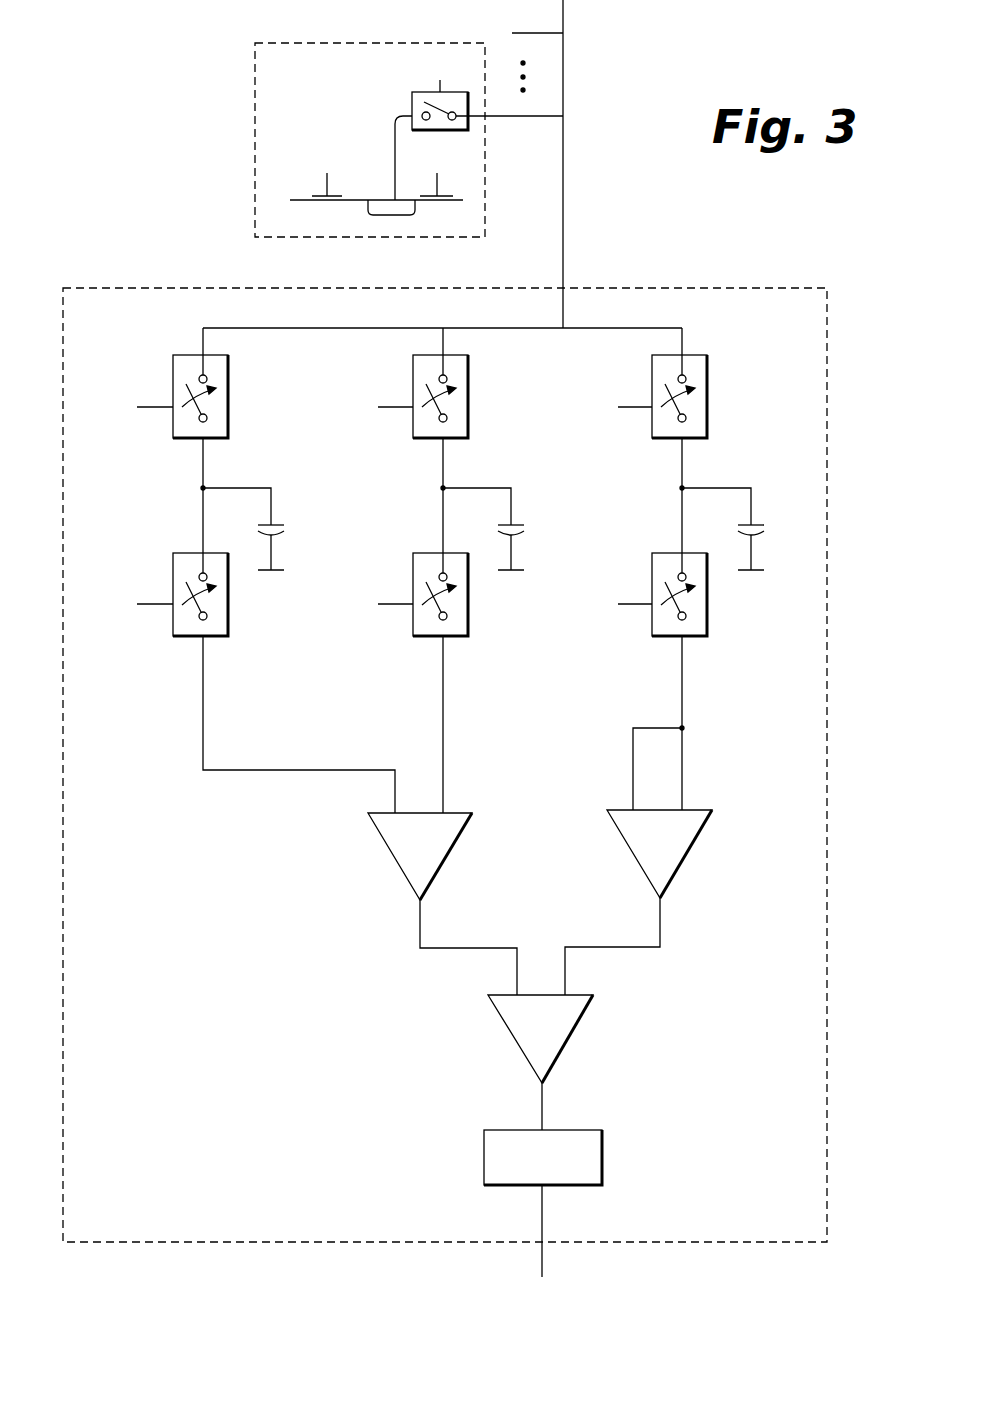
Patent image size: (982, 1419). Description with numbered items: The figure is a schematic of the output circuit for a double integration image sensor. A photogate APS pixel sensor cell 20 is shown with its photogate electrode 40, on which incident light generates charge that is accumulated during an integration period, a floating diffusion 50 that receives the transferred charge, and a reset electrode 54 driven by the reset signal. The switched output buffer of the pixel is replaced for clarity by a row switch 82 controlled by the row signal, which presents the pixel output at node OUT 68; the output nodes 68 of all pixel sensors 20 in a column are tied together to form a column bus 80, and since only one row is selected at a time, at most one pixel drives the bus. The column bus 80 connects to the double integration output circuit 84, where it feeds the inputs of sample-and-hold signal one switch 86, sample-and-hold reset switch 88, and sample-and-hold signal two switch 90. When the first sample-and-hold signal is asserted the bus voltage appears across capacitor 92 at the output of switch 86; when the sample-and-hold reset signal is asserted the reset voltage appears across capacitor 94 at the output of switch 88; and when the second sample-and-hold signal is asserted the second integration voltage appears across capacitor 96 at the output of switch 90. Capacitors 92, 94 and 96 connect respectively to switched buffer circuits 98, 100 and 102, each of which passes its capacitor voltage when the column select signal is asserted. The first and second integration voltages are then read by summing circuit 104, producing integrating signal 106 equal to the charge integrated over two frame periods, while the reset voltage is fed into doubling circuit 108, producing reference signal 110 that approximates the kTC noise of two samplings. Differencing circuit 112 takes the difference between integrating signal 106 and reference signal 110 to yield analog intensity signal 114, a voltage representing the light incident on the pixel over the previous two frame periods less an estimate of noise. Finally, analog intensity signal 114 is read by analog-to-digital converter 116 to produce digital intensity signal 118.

The pixel sensor cell 20 is at (255, 211).
The photogate electrode 40 is at (318, 197).
The floating diffusion 50 is at (415, 208).
The reset electrode 54 is at (448, 196).
The node OUT 68 is at (543, 118).
The column bus 80 is at (563, 203).
The row switch 82 is at (412, 100).
The double integration output circuit 84 is at (165, 287).
The sample-and-hold signal 1 switch 86 is at (173, 420).
The sample-and-hold reset switch 88 is at (652, 420).
The sample-and-hold signal 2 switch 90 is at (413, 420).
The capacitor 92 is at (278, 527).
The capacitor 94 is at (755, 527).
The capacitor 96 is at (515, 527).
The switched buffer circuit 98 is at (173, 618).
The switched buffer circuit 100 is at (652, 618).
The switched buffer circuit 102 is at (413, 618).
The summing circuit 104 is at (398, 866).
The integrating signal 106 is at (420, 922).
The doubling circuit 108 is at (680, 862).
The reference signal 110 is at (660, 918).
The differencing circuit 112 is at (575, 1035).
The analog intensity signal 114 is at (542, 1100).
The ADC 116 is at (602, 1145).
The digital intensity signal 118 is at (542, 1208).